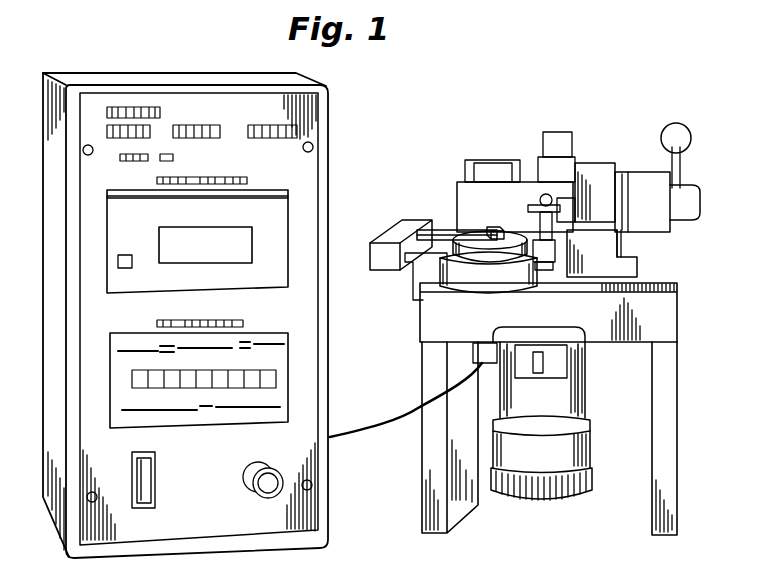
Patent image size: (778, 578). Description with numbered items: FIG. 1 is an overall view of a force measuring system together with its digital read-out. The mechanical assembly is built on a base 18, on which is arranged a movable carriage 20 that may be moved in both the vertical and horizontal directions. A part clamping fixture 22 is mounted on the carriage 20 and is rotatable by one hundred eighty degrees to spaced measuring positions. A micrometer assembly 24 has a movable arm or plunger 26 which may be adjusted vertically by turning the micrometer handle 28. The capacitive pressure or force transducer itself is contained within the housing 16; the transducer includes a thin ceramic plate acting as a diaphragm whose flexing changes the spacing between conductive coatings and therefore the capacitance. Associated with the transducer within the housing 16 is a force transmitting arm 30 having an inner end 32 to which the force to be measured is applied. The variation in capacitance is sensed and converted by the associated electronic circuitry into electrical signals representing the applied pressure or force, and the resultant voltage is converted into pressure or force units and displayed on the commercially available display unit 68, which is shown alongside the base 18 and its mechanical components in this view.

The housing 16 is at (480, 258).
The base 18 is at (667, 320).
The movable carriage 20 is at (463, 207).
The part clamping fixture 22 is at (590, 177).
The micrometer assembly 24 is at (560, 448).
The movable arm or plunger 26 is at (540, 228).
The micrometer handle 28 is at (553, 493).
The force transmitting arm 30 is at (438, 229).
The inner end 32 is at (488, 228).
The display unit 68 is at (308, 118).